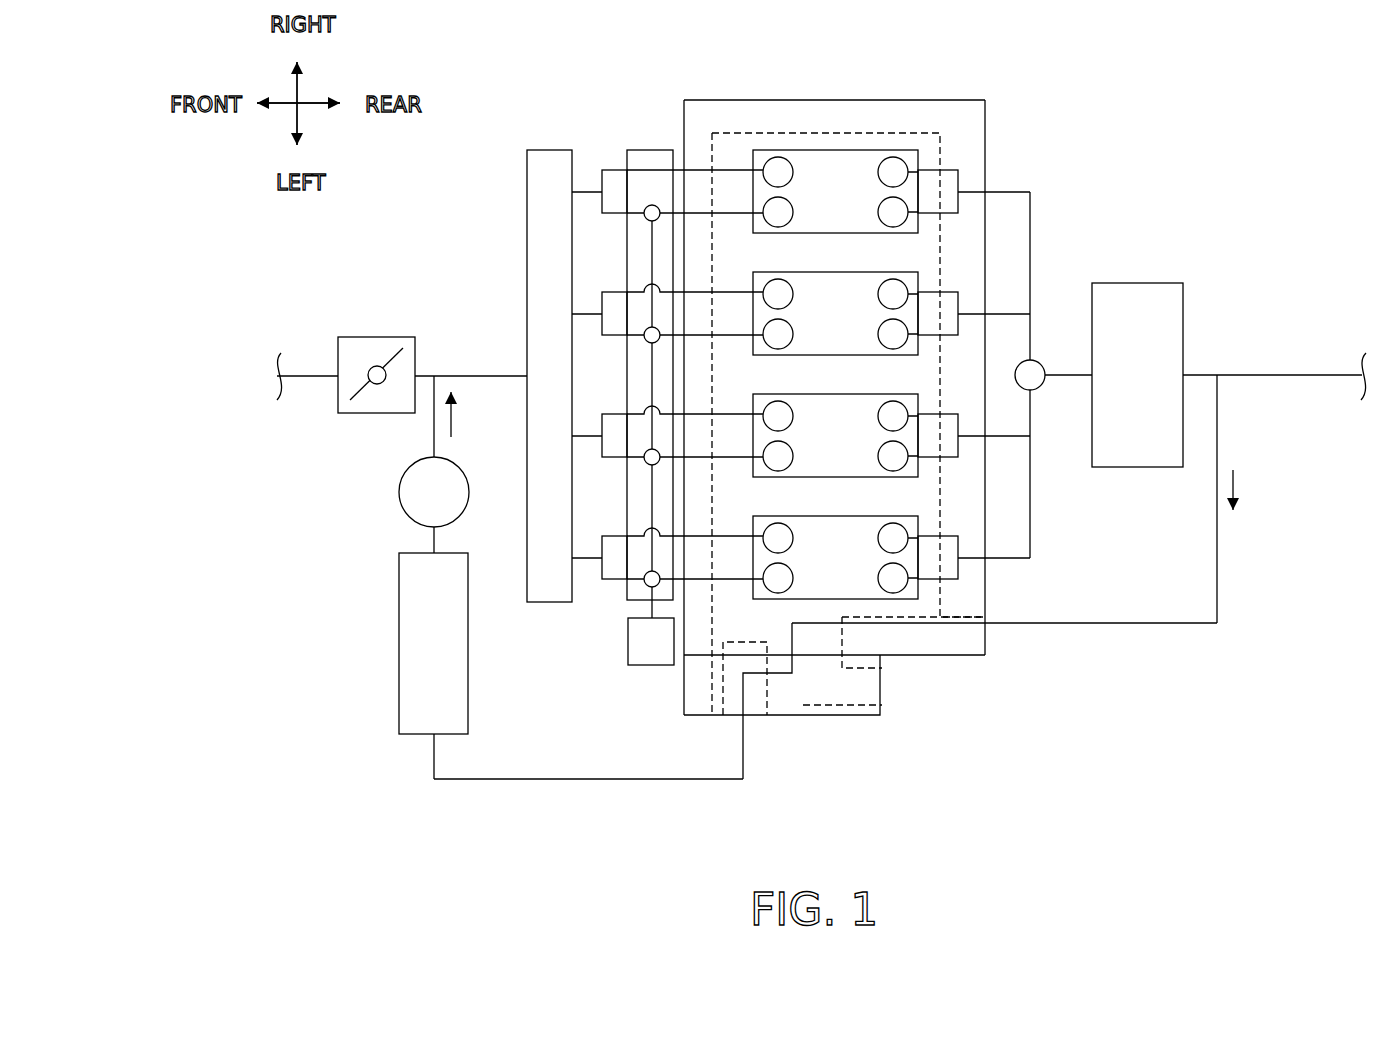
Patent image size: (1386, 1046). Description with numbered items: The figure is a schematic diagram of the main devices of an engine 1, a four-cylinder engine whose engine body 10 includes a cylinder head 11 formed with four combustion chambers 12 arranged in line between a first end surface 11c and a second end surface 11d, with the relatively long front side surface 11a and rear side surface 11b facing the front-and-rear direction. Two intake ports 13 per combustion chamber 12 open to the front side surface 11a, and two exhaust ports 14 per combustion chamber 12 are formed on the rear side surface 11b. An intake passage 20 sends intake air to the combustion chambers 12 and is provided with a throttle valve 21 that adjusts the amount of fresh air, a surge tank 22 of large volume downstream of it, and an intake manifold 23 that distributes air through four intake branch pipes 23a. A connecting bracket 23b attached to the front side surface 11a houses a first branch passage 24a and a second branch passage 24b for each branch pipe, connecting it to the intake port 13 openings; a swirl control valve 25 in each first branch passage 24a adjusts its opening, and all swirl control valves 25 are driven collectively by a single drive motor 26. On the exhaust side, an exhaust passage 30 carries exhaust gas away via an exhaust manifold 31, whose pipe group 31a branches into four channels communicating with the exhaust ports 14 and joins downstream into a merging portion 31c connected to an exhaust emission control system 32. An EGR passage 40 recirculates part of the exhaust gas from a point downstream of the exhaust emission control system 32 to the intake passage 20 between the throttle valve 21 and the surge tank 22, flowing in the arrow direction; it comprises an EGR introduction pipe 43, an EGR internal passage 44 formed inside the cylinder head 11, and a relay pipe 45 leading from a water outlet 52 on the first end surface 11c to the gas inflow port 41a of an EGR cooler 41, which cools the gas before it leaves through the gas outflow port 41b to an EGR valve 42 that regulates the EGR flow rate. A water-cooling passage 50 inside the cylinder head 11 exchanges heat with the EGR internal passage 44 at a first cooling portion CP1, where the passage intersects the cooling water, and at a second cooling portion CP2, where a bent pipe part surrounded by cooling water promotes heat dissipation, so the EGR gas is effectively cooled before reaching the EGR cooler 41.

The engine 1 is at (1303, 126).
The engine body 10 is at (867, 362).
The cylinder head 11 is at (867, 362).
The front side surface 11a is at (684, 128).
The rear side surface 11b is at (985, 131).
The first end surface 11c is at (972, 657).
The second end surface 11d is at (830, 100).
The combustion chamber 12 is at (822, 209).
The intake port 13 is at (743, 170).
The exhaust port 14 is at (950, 172).
The intake passage 20 is at (312, 380).
The throttle valve 21 is at (375, 337).
The surge tank 22 is at (527, 183).
The intake manifold 23 is at (552, 453).
The intake branch pipe 23a is at (595, 565).
The connecting bracket 23b is at (625, 590).
The first branch passage 24a is at (666, 200).
The second branch passage 24b is at (670, 205).
The swirl control valve 25 is at (645, 337).
The drive motor 26 is at (652, 667).
The exhaust passage 30 is at (1300, 371).
The exhaust manifold 31 is at (1035, 221).
The pipe group 31a is at (1033, 522).
The merging portion 31c is at (1038, 362).
The exhaust emission control system 32 is at (1183, 312).
The EGR passage 40 is at (810, 612).
The EGR cooler 41 is at (399, 652).
The gas inflow port 41a is at (430, 738).
The gas outflow port 41b is at (437, 545).
The EGR valve 42 is at (399, 491).
The EGR introduction pipe 43 is at (1218, 578).
The EGR internal passage 44 is at (907, 625).
The relay pipe 45 is at (575, 781).
The water-cooling passage 50 is at (928, 603).
The water outlet 52 is at (790, 718).
The first cooling portion CP1 is at (820, 627).
The second cooling portion CP2 is at (783, 677).